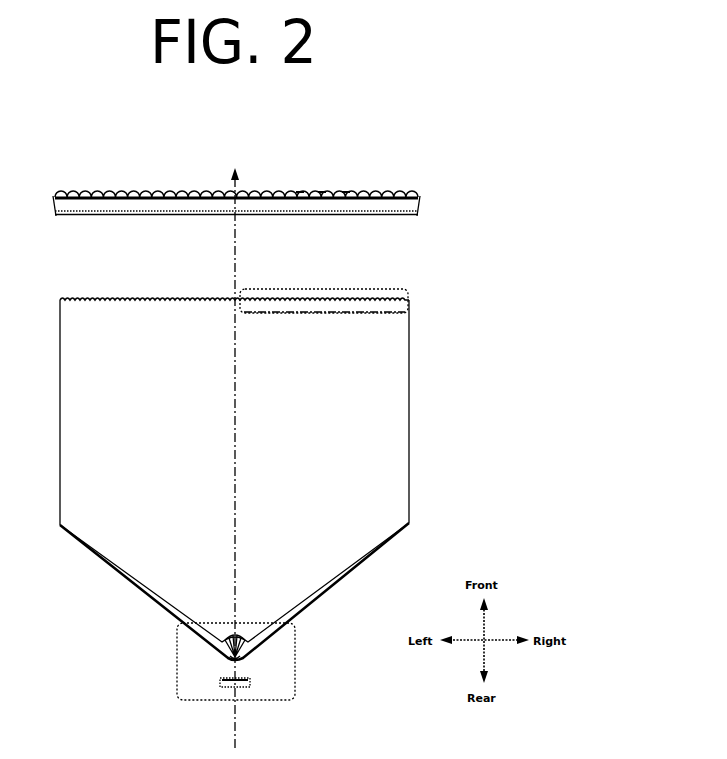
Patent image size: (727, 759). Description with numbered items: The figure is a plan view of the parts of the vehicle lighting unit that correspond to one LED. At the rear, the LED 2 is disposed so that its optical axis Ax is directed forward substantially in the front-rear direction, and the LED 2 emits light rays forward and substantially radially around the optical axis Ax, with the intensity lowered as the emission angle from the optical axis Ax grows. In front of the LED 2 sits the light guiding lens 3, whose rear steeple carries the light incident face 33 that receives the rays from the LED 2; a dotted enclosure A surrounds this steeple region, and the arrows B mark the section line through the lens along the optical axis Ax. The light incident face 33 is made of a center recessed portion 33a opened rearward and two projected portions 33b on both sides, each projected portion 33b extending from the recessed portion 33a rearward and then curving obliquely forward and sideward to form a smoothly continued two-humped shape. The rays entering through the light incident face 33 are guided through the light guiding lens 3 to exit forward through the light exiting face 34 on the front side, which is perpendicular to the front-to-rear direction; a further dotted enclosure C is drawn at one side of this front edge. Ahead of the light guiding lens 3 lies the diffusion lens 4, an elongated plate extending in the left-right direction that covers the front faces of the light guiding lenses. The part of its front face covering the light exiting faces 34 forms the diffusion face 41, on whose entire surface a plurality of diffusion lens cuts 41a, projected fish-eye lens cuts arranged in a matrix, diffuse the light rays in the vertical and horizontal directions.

The light emitting diode 2 is at (246, 688).
The light guiding lens 3 is at (410, 413).
The diffusion lens 4 is at (419, 200).
The light incident face 33 is at (210, 645).
The center recessed portion 33a is at (233, 662).
The projected portion 33b is at (192, 636).
The light exiting face 34 is at (118, 298).
The diffusion face 41 is at (140, 191).
The diffusion lens cut 41a is at (347, 191).
The region A is at (297, 668).
The section B- B is at (228, 560).
The region C is at (392, 290).
The optical axis Ax is at (233, 448).